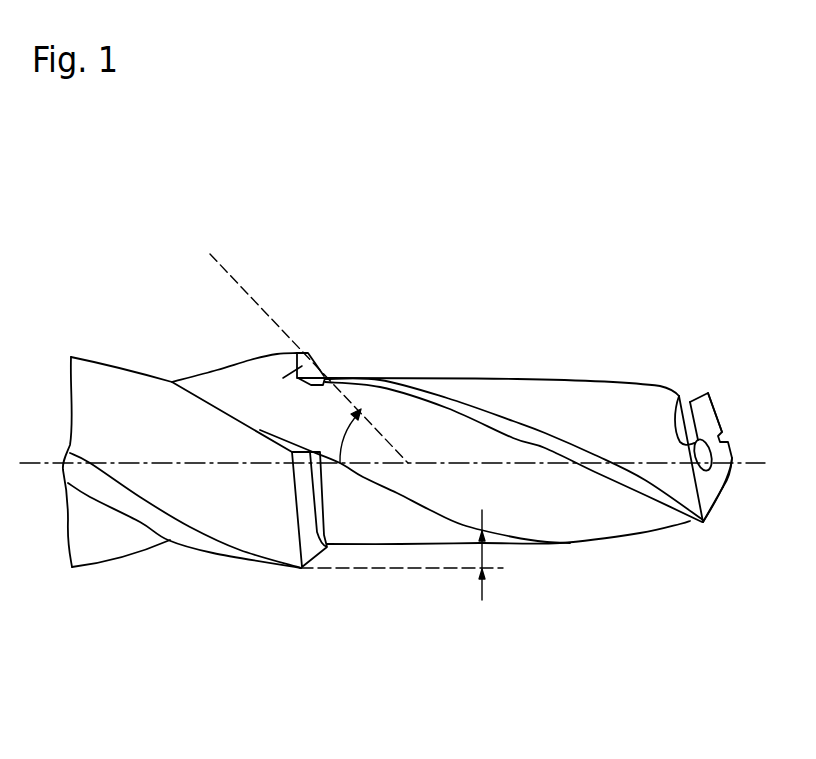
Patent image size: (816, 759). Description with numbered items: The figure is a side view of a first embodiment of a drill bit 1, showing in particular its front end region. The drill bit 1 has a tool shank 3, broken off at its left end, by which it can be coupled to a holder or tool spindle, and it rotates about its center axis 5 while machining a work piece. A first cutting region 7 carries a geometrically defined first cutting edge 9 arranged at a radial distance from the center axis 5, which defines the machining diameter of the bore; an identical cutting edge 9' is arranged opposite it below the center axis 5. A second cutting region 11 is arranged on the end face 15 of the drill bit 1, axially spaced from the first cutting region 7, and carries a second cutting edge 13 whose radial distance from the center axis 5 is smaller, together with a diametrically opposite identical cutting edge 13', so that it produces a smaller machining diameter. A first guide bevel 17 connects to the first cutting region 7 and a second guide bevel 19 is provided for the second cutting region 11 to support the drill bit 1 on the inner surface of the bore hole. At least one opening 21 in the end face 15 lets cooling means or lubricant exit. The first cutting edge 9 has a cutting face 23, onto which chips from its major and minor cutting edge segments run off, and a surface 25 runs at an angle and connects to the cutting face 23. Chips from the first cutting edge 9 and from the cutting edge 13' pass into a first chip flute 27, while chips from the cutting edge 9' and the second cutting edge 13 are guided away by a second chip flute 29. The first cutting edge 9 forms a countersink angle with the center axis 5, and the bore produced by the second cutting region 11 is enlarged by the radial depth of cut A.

The drill bit 1 is at (128, 643).
The tool shank 3 is at (97, 358).
The center axis 5 is at (762, 461).
The first cutting region 7 is at (313, 350).
The first cutting edge 9 is at (324, 335).
The cutting edge 9' is at (491, 544).
The second cutting region 11 is at (711, 382).
The second cutting edge 13 is at (736, 381).
The cutting edge 13' is at (733, 544).
The end face 15 is at (728, 484).
The first guide bevel 17 is at (213, 550).
The second guide bevel 19 is at (457, 404).
The opening 21 is at (679, 395).
The cutting face 23 is at (301, 366).
The surface 25 is at (324, 378).
The first chip flute 27 is at (272, 403).
The second chip flute 29 is at (103, 548).
The radial depth of cut A is at (401, 560).